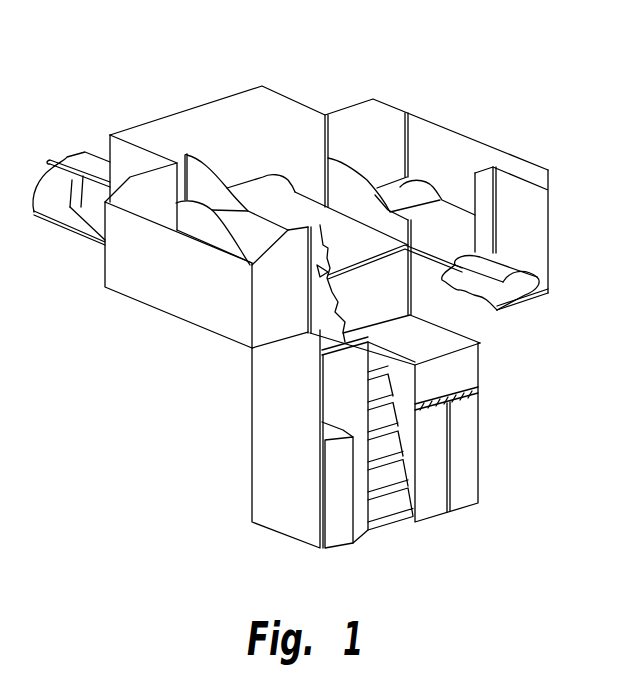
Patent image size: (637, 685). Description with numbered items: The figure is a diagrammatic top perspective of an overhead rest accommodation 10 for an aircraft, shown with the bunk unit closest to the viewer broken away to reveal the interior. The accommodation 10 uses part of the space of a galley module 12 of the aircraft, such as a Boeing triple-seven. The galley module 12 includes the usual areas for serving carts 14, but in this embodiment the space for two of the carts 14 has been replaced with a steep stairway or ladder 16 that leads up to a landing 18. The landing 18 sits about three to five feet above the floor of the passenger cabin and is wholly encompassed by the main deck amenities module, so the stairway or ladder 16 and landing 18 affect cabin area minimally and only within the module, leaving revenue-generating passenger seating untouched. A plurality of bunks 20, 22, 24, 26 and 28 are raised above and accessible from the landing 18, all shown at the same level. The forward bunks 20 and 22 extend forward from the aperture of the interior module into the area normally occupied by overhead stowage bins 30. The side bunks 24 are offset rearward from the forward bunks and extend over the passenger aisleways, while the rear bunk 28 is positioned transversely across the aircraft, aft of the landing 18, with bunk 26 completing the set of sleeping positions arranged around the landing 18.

The overhead rest accommodation 10 is at (422, 108).
The galley module 12 is at (243, 482).
The serving carts 14 is at (340, 537).
The stairway or ladder 16 is at (387, 518).
The landing 18 is at (448, 337).
The bunk 20 is at (222, 227).
The bunk 22 is at (293, 197).
The side bunk 24 is at (172, 300).
The bunk 26 is at (445, 218).
The rear bunk 28 is at (497, 293).
The overhead stowage bins 30 is at (85, 150).